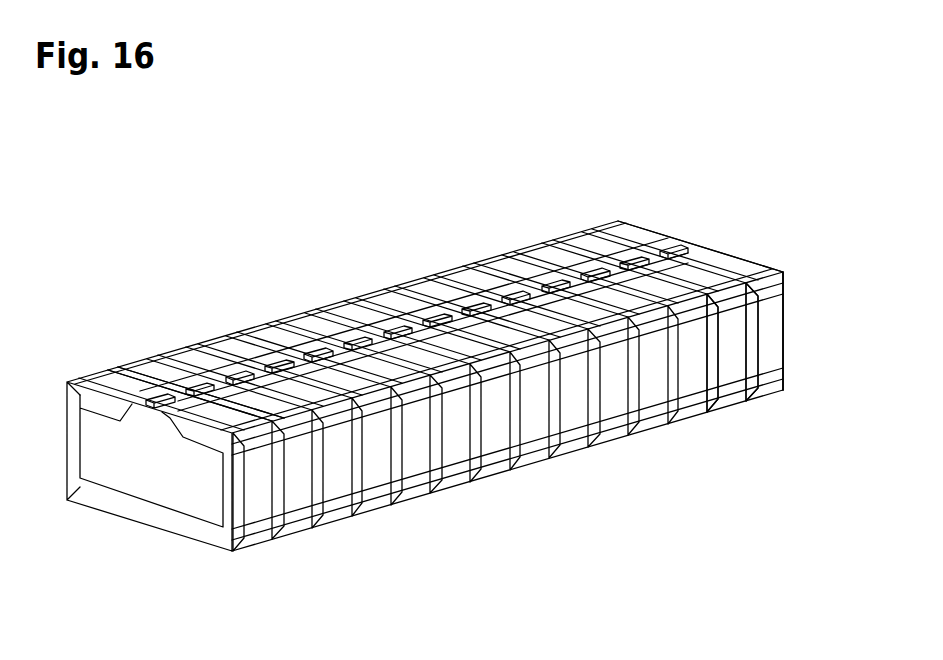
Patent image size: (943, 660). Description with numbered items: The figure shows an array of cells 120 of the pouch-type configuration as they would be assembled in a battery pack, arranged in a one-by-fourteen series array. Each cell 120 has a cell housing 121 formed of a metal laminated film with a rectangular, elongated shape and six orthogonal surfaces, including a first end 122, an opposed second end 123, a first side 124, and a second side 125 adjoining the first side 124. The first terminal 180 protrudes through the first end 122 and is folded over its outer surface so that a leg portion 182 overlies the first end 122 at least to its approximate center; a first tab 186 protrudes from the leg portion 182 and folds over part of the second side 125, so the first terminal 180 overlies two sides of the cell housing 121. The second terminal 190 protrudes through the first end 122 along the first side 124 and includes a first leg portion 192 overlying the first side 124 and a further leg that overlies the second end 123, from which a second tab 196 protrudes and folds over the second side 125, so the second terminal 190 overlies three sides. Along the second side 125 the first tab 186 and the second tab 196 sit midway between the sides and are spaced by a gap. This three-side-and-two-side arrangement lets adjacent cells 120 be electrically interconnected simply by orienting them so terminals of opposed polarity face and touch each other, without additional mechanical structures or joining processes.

The cell 120 is at (613, 232).
The cell housing 121 is at (222, 350).
The first end 122 is at (197, 522).
The second end 123 is at (787, 373).
The first side 124 is at (325, 522).
The second side 125 is at (265, 410).
The first terminal 180 is at (123, 470).
The leg portion 182 is at (123, 470).
The first tab 186 is at (143, 400).
The second terminal 190 is at (413, 462).
The first leg portion 192 is at (770, 325).
The second tab 196 is at (707, 250).